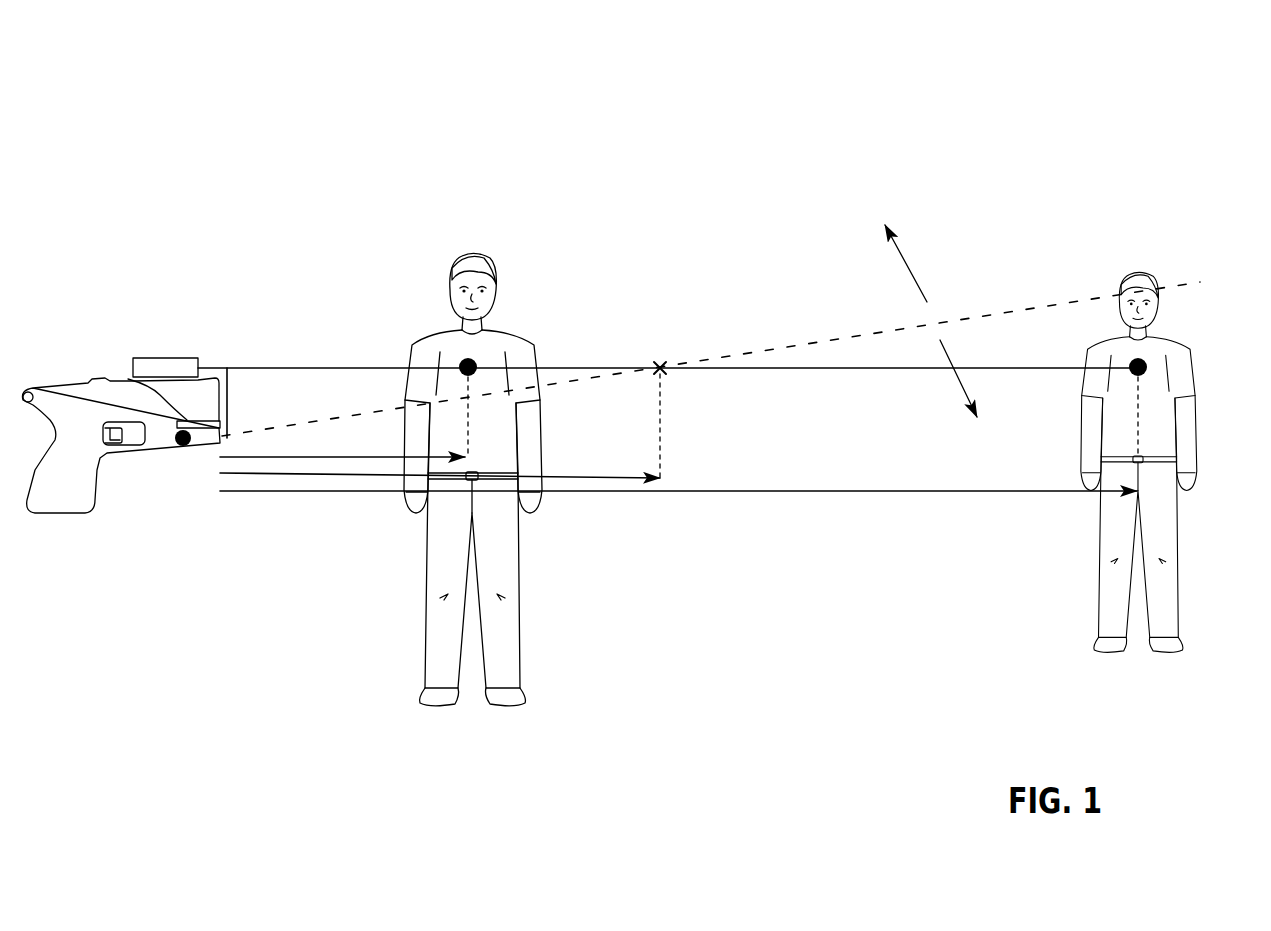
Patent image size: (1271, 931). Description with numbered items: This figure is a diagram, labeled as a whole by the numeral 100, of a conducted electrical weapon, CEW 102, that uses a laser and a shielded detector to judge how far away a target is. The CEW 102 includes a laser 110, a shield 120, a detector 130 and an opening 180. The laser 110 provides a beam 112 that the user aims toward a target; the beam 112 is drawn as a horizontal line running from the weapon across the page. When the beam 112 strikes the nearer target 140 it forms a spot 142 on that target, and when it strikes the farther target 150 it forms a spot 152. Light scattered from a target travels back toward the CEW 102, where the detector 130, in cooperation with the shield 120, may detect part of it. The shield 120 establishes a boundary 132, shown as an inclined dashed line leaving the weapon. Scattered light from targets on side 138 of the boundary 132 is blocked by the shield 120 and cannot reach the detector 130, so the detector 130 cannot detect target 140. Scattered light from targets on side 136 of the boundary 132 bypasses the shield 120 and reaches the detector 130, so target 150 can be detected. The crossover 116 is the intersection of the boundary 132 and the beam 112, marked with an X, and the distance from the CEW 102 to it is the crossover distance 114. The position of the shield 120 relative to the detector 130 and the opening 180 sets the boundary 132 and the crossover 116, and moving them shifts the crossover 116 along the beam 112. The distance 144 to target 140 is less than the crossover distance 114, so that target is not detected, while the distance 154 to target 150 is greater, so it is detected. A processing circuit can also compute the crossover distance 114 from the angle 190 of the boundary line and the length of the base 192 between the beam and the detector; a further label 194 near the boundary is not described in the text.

The conducted electrical weapon system 100 is at (143, 113).
The CEW 102 is at (52, 387).
The laser 110 is at (180, 358).
The beam 112 is at (240, 368).
The crossover distance 114 is at (440, 466).
The crossover 116 is at (657, 363).
The shield 120 is at (128, 379).
The detector 130 is at (181, 446).
The boundary 132 is at (795, 347).
The side 136 is at (951, 384).
The side 138 is at (911, 258).
The target 140 is at (472, 254).
The spot 142 is at (460, 363).
The distance 144 is at (342, 445).
The target 150 is at (1137, 268).
The spot 152 is at (1145, 358).
The distance 154 is at (678, 479).
The opening 180 is at (222, 433).
The angle 190 is at (248, 436).
The base 192 is at (227, 388).
The laser beam offset 194 is at (578, 385).